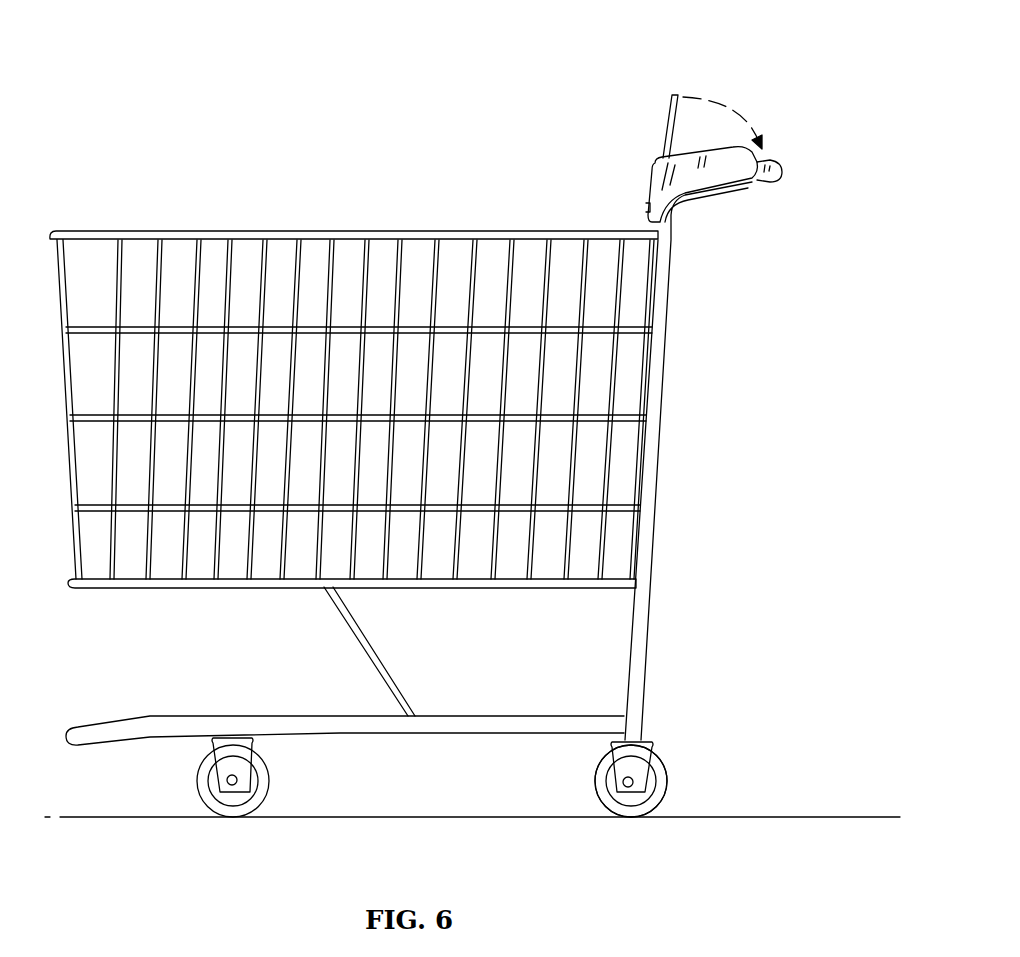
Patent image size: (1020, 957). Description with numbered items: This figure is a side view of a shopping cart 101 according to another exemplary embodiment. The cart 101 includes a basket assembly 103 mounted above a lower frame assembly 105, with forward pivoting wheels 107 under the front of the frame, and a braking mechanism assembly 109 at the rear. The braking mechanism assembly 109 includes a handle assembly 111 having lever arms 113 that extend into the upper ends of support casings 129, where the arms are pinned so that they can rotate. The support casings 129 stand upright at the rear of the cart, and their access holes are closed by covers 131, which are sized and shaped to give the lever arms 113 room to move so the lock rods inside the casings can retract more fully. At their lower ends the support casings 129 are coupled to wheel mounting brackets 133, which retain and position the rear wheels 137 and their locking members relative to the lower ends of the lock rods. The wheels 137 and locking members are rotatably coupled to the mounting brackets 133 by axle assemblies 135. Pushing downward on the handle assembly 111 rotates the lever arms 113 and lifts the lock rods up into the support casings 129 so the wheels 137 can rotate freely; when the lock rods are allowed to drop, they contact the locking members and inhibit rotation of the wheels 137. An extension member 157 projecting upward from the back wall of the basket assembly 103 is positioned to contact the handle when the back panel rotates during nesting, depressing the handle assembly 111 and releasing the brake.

The shopping cart 101 is at (520, 192).
The basket assembly 103 is at (295, 218).
The lower frame assembly 105 is at (74, 728).
The forward pivoting wheels 107 is at (268, 780).
The braking mechanism assembly 109 is at (588, 103).
The handle assembly 111 is at (783, 158).
The lever arms 113 is at (765, 185).
The support casings 129 is at (653, 437).
The covers 131 is at (658, 173).
The wheel mounting brackets 133 is at (652, 746).
The axle assemblies 135 is at (624, 778).
The wheels 137 is at (596, 780).
The extension member 157 is at (668, 110).